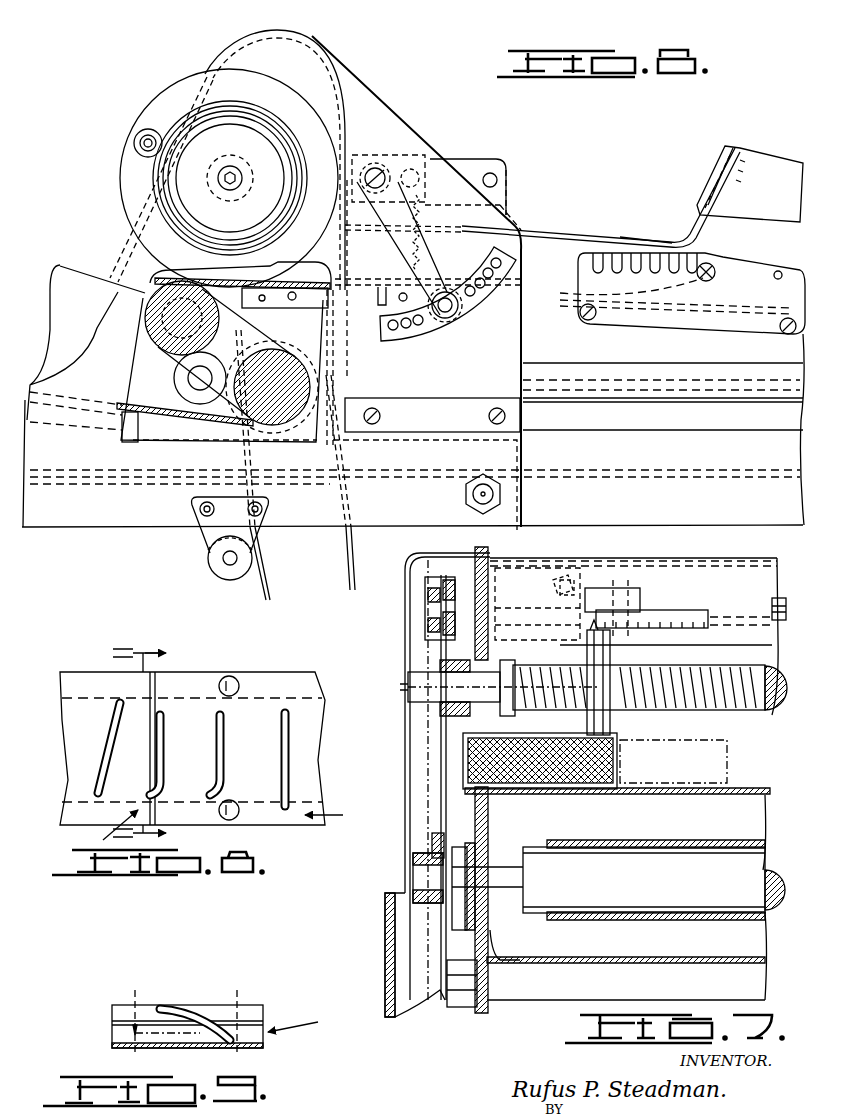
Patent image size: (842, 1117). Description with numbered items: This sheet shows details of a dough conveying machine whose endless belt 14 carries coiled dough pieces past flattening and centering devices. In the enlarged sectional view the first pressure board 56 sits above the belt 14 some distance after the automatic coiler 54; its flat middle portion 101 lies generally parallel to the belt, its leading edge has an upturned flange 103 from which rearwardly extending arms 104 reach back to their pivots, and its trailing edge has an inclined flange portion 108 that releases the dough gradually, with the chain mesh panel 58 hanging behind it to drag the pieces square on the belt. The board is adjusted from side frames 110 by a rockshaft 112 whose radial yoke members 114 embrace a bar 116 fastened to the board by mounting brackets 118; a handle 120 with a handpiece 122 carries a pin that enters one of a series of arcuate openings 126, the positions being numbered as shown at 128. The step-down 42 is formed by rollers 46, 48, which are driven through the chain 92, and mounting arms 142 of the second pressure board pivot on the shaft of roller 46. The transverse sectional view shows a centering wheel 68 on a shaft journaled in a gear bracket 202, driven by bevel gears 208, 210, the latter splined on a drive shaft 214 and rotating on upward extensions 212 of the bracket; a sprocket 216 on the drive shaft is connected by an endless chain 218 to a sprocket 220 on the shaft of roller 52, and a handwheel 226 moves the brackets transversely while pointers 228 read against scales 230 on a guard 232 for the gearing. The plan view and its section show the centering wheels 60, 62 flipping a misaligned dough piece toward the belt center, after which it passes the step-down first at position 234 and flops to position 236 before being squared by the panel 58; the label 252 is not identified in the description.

In FIG. 6, the endless belt 14 is at (273, 278).
In FIG. 7, the endless belt 14 is at (770, 790).
In FIG. 8, the endless belt 14 is at (305, 713).
In FIG. 9, the endless belt 14 is at (250, 1005).
In FIG. 8, the step-down 42 is at (106, 829).
In FIG. 9, the step-down 42 is at (293, 1024).
In FIG. 6, the roller 46 is at (158, 295).
In FIG. 6, the roller 48 is at (298, 383).
In FIG. 7, the roller 52 is at (640, 887).
In FIG. 6, the automatic coiler 54 is at (745, 262).
In FIG. 6, the pressure board 56 is at (614, 236).
In FIG. 6, the chain mesh panel 58 is at (415, 252).
In FIG. 8, the centering wheel 60 is at (240, 690).
In FIG. 8, the centering wheel 62 is at (240, 811).
In FIG. 7, the centering wheel 68 is at (615, 769).
In FIG. 6, the chain 92 is at (356, 560).
In FIG. 6, the flat middle portion 101 is at (545, 233).
In FIG. 6, the upturned flange 103 is at (696, 233).
In FIG. 6, the rearwardly extending arms 104 is at (753, 163).
In FIG. 6, the inclined flange portion 108 is at (500, 194).
In FIG. 6, the side frames 110 is at (366, 110).
In FIG. 7, the side frames 110 is at (490, 949).
In FIG. 6, the rockshaft 112 is at (378, 167).
In FIG. 6, the radial yoke members 114 is at (424, 139).
In FIG. 6, the bar 116 is at (436, 152).
In FIG. 6, the mounting brackets 118 is at (462, 158).
In FIG. 6, the handle 120 is at (437, 262).
In FIG. 6, the handpiece 122 is at (458, 316).
In FIG. 6, the openings 126 is at (522, 254).
In FIG. 6, the position designations 128 is at (415, 348).
In FIG. 6, the mounting arms 142 is at (70, 270).
In FIG. 7, the gear brackets 202 is at (490, 667).
In FIG. 7, the bevel gears 208 is at (506, 622).
In FIG. 7, the bevel gears 210 is at (572, 576).
In FIG. 7, the upward extensions 212 is at (607, 580).
In FIG. 7, the drive shaft 214 is at (781, 598).
In FIG. 7, the sprocket 216 is at (428, 598).
In FIG. 7, the endless chain 218 is at (430, 760).
In FIG. 7, the sprocket 220 is at (437, 842).
In FIG. 6, the handwheel 226 is at (167, 100).
In FIG. 7, the pointers 228 is at (608, 640).
In FIG. 7, the scales 230 is at (677, 606).
In FIG. 8, the scales 230 is at (290, 748).
In FIG. 6, the guard 232 is at (305, 57).
In FIG. 7, the guard 232 is at (708, 567).
In FIG. 8, the dough piece position 234 is at (165, 748).
In FIG. 9, the dough piece position 234 is at (178, 1007).
In FIG. 8, the dough piece position 236 is at (105, 748).
In FIG. 8, the slot 252 is at (224, 745).